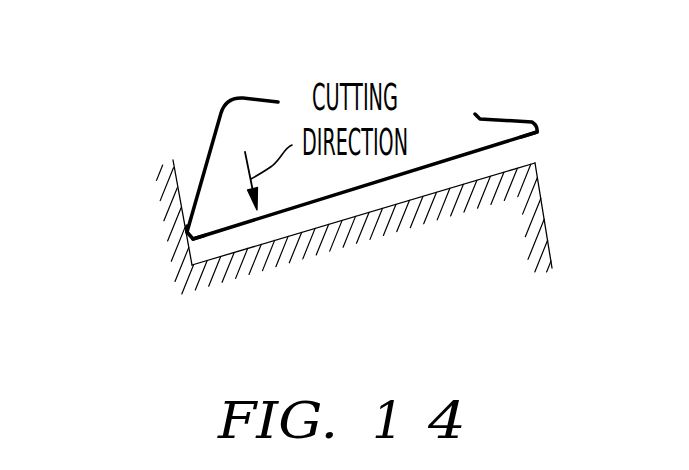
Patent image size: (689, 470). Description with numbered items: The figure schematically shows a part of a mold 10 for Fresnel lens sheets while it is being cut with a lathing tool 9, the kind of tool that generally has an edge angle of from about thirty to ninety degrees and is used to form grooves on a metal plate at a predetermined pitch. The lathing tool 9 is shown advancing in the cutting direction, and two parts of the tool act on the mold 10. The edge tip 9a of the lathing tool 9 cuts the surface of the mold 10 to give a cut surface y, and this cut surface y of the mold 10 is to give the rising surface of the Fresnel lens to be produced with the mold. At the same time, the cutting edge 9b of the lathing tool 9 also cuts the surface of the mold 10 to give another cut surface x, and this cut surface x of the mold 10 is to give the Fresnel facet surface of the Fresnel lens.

The lathing tool 9 is at (225, 130).
The edge tip 9a is at (182, 233).
The cutting edge 9b is at (470, 152).
The mold 10 is at (155, 212).
The cut surface x is at (305, 235).
The cut surface y is at (173, 168).